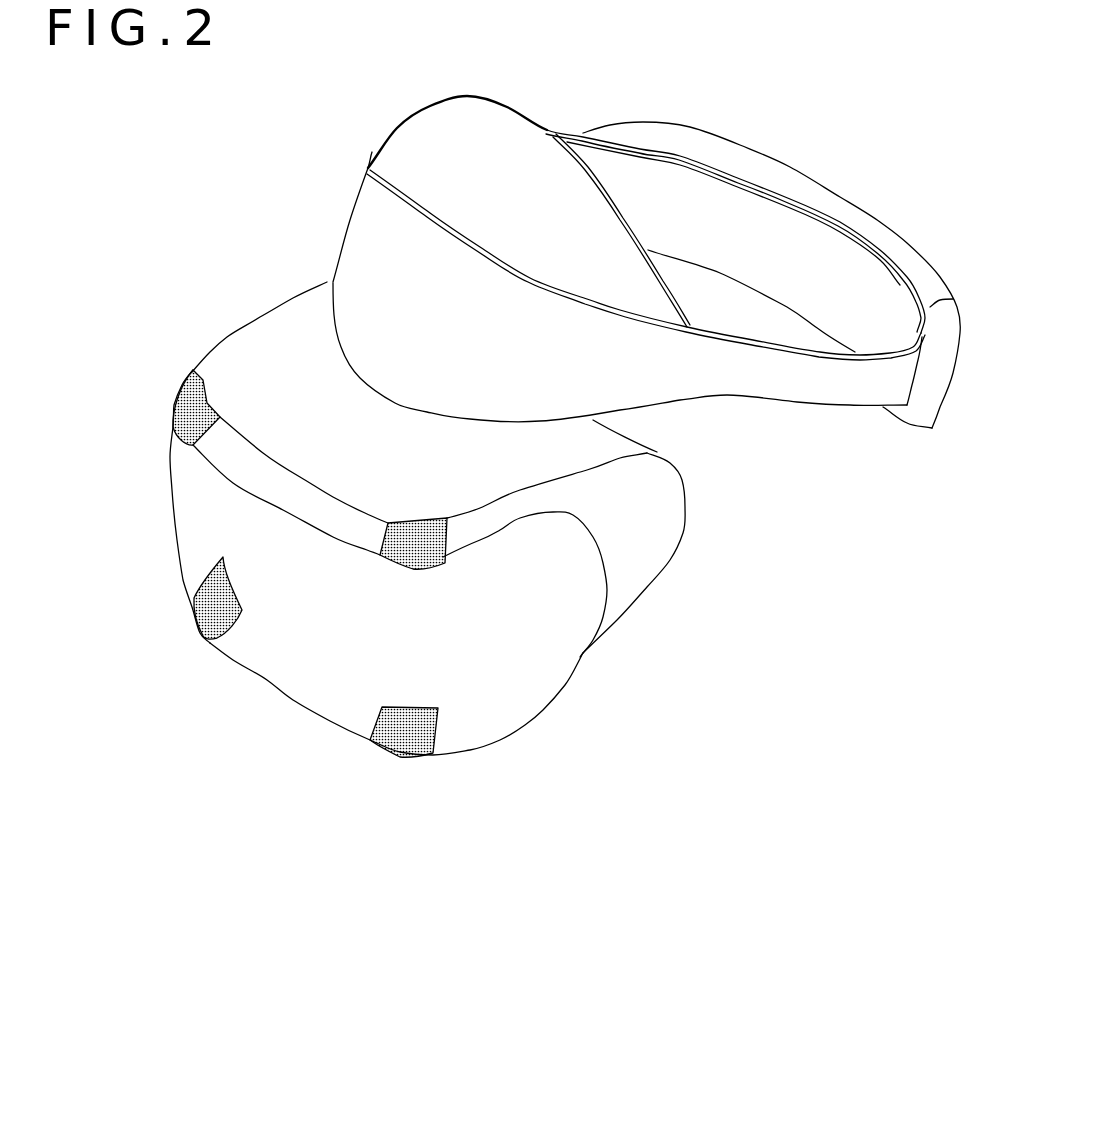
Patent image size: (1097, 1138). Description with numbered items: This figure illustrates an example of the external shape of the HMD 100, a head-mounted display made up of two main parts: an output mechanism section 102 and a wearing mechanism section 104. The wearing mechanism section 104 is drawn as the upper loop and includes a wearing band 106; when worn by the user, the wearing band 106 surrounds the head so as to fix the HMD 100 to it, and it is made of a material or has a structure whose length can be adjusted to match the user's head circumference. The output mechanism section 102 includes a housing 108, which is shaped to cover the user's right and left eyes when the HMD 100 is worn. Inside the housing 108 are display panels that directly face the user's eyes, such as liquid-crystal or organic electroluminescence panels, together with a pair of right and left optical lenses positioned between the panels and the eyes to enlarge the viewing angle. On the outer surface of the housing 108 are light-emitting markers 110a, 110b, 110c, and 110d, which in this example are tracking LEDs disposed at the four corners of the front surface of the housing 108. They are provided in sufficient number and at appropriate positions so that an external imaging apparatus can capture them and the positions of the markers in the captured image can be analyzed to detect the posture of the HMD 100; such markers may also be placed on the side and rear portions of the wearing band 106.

The HMD 100 is at (515, 930).
The output mechanism section 102 is at (363, 545).
The wearing mechanism section 104 is at (841, 158).
The wearing band 106 is at (797, 402).
The housing 108 is at (543, 710).
The light-emitting marker 110a is at (197, 368).
The light-emitting marker 110b is at (417, 520).
The light-emitting marker 110c is at (210, 641).
The light-emitting marker 110d is at (400, 750).